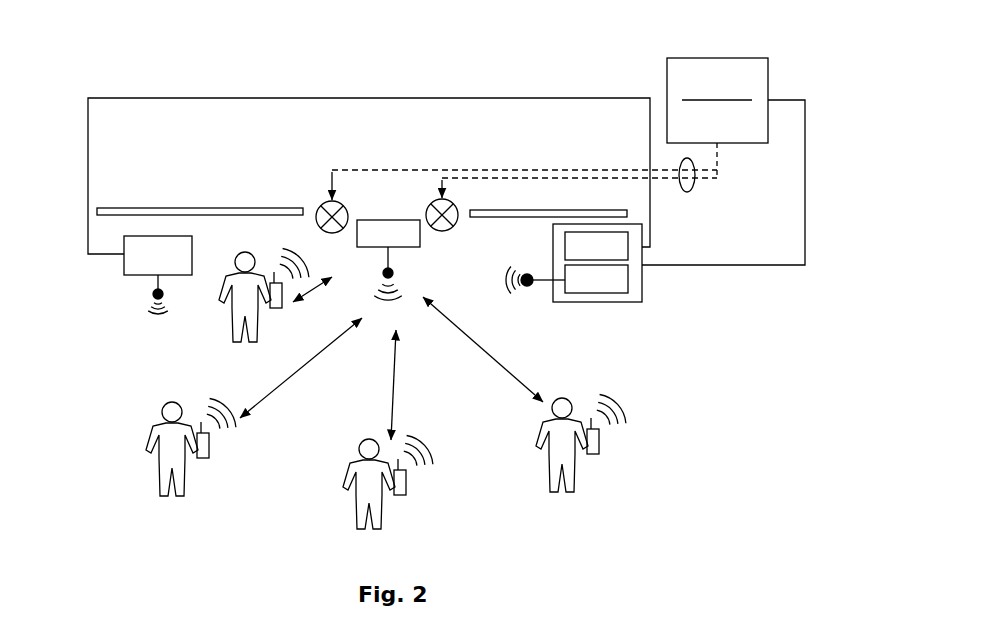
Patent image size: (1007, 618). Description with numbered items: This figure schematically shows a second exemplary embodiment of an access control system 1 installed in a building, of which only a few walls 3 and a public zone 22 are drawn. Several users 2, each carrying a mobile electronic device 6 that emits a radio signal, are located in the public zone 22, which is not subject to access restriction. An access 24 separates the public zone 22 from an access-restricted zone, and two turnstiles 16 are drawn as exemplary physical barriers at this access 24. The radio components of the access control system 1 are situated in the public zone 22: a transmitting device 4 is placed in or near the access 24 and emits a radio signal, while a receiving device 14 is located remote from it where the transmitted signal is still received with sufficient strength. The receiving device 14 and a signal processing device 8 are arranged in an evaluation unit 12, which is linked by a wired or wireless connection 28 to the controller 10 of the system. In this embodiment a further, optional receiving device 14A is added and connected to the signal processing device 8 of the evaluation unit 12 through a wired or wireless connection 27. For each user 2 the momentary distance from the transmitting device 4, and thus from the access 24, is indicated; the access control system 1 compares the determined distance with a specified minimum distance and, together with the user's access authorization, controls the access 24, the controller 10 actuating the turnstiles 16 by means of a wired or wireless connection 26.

The access control system 1 is at (716, 382).
The user 2 is at (230, 307).
The wall 3 is at (533, 210).
The transmitting device 4 is at (397, 220).
The mobile electronic device 6 is at (283, 307).
The signal processing device 8 is at (565, 243).
The ECS/ACS control system 10 is at (722, 58).
The evaluation unit 12 is at (602, 290).
The receiving device 14 is at (628, 281).
The further receiving device 14A is at (130, 276).
The turnstile 16 is at (320, 205).
The public zone 22 is at (470, 401).
The access 24 is at (487, 143).
The connection 26 is at (693, 184).
The connection 27 is at (207, 97).
The connection 28 is at (747, 266).